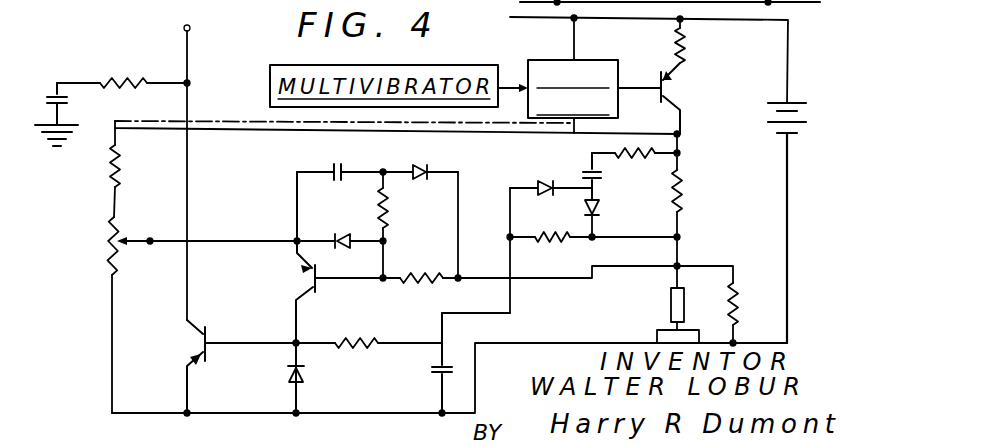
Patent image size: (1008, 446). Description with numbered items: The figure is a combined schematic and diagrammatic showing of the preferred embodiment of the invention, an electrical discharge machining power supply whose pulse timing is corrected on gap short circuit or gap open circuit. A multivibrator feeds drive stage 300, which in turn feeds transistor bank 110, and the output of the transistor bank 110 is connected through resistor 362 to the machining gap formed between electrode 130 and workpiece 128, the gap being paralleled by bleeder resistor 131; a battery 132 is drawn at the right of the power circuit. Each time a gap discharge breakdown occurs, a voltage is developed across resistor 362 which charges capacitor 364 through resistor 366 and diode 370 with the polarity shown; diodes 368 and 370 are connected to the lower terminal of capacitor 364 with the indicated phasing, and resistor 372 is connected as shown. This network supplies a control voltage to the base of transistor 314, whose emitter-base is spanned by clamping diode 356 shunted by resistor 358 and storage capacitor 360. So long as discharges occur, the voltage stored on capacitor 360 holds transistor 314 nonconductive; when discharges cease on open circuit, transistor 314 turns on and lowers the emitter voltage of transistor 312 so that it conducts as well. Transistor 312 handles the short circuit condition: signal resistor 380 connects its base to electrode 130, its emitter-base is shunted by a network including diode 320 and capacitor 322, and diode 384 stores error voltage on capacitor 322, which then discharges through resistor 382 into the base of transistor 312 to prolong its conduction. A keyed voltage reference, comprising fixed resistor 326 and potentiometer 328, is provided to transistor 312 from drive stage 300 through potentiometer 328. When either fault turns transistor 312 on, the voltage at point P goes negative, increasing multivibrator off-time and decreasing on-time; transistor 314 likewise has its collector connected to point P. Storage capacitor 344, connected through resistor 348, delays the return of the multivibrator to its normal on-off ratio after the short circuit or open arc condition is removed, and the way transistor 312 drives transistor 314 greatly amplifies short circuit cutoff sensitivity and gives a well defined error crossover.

The transistor bank 110 is at (688, 80).
The workpiece 128 is at (650, 334).
The electrode 130 is at (670, 304).
The bleeder resistor 131 is at (740, 288).
The battery 132 is at (800, 103).
The drive stage 300 is at (553, 56).
The transistor 312 is at (296, 275).
The transistor 314 is at (186, 342).
The diode 320 is at (358, 230).
The capacitor 322 is at (343, 158).
The fixed resistor 326 is at (110, 170).
The potentiometer 328 is at (92, 250).
The storage capacitor 344 is at (47, 96).
The resistor 348 is at (124, 80).
The clamping diode 356 is at (287, 376).
The resistor 358 is at (377, 338).
The storage capacitor 360 is at (432, 368).
The resistor 362 is at (686, 186).
The capacitor 364 is at (582, 165).
The resistor 366 is at (645, 160).
The diode 368 is at (545, 182).
The diode 370 is at (600, 207).
The resistor 372 is at (540, 242).
The signal resistor 380 is at (444, 270).
The resistor 382 is at (391, 210).
The diode 384 is at (425, 166).
The point P is at (198, 165).